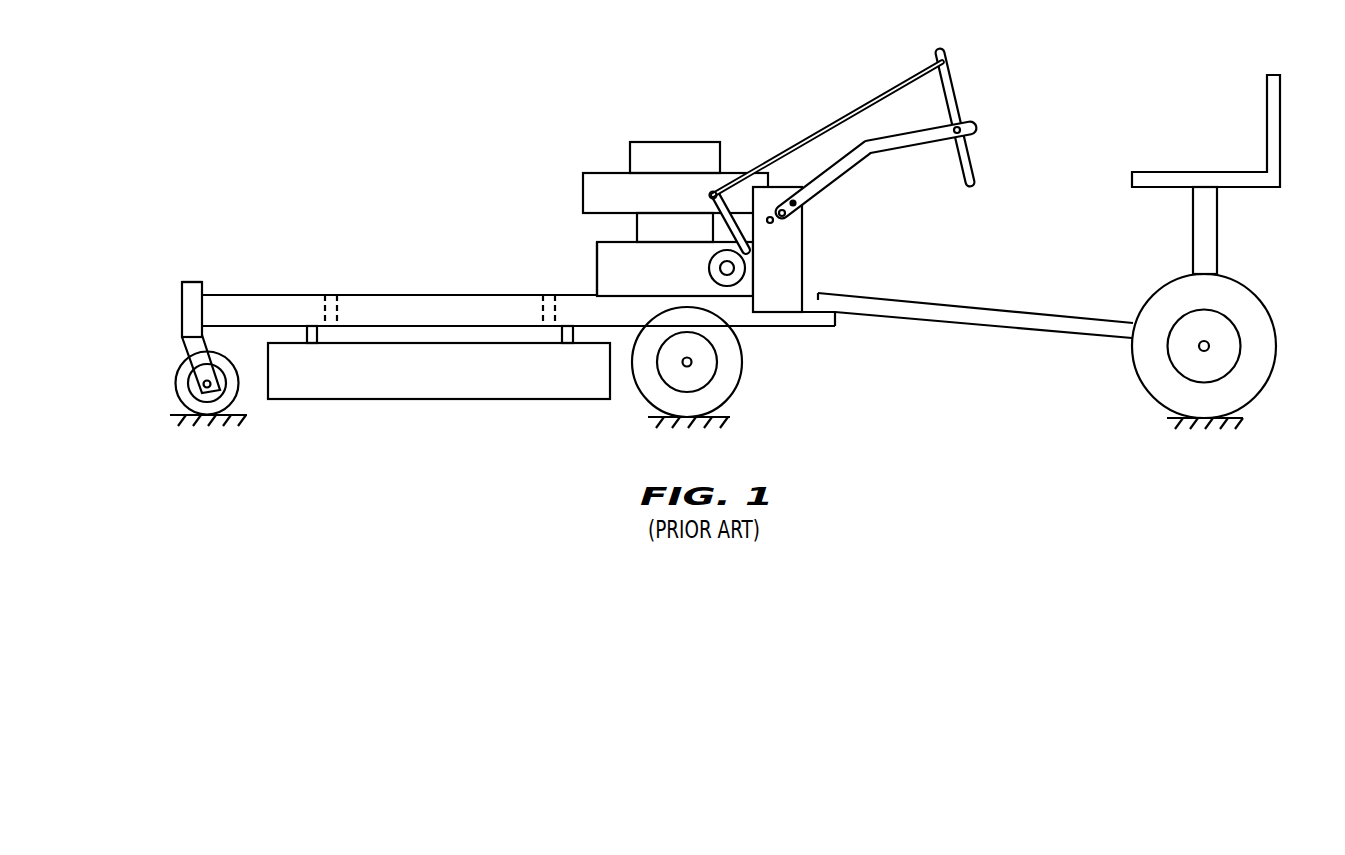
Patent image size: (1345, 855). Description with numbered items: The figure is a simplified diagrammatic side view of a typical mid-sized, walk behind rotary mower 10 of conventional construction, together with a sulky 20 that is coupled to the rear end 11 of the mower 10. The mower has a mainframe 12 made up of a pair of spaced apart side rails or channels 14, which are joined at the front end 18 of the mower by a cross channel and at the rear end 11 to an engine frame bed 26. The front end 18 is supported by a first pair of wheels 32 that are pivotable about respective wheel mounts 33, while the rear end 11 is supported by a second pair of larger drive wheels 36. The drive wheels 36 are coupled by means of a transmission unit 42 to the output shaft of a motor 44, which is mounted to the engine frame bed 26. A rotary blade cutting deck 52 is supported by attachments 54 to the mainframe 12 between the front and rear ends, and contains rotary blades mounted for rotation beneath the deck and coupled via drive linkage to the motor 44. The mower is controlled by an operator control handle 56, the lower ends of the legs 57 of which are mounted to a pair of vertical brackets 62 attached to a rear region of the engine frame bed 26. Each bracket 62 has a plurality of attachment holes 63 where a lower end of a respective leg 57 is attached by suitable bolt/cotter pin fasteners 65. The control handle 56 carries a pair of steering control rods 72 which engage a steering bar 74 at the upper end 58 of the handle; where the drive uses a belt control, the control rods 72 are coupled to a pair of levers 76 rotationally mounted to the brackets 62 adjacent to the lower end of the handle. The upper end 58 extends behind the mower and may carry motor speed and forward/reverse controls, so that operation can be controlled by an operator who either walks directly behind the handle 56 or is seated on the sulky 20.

The walk behind rotary mower 10 is at (338, 132).
The rear end 11 is at (807, 330).
The mainframe 12 is at (223, 265).
The side rail or channel 14 is at (418, 295).
The front end 18 is at (182, 308).
The sulky 20 is at (1270, 236).
The engine frame bed 26 is at (613, 295).
The front wheel 32 is at (175, 378).
The caster pivot shafts 33 is at (193, 282).
The drive wheel 36 is at (737, 393).
The transmission unit 42 is at (708, 273).
The motor 44 is at (597, 260).
The rotary blade cutting deck 52 is at (470, 400).
The attachments 54 is at (310, 327).
The operator control handle 56 is at (920, 162).
The legs 57 is at (827, 193).
The upper end of control handle 58 is at (980, 127).
The vertical bracket 62 is at (805, 260).
The attachment holes 63 is at (769, 216).
The bolt/cotter pin fasteners 65 is at (793, 200).
The steering control rods 72 is at (872, 100).
The steering bar 74 is at (955, 83).
The lever 76 is at (713, 190).